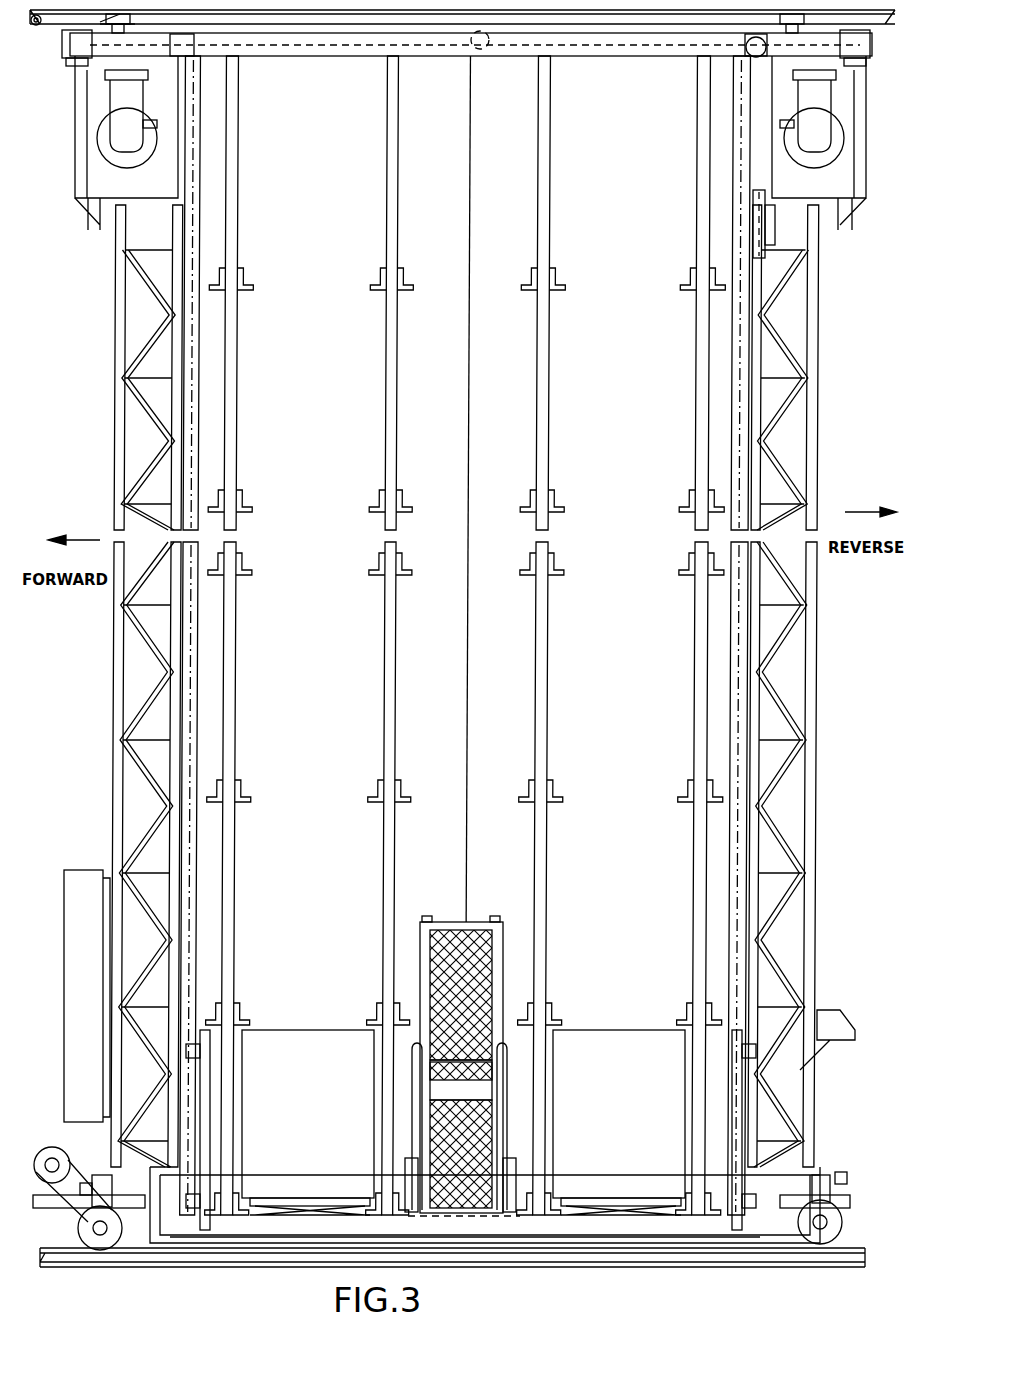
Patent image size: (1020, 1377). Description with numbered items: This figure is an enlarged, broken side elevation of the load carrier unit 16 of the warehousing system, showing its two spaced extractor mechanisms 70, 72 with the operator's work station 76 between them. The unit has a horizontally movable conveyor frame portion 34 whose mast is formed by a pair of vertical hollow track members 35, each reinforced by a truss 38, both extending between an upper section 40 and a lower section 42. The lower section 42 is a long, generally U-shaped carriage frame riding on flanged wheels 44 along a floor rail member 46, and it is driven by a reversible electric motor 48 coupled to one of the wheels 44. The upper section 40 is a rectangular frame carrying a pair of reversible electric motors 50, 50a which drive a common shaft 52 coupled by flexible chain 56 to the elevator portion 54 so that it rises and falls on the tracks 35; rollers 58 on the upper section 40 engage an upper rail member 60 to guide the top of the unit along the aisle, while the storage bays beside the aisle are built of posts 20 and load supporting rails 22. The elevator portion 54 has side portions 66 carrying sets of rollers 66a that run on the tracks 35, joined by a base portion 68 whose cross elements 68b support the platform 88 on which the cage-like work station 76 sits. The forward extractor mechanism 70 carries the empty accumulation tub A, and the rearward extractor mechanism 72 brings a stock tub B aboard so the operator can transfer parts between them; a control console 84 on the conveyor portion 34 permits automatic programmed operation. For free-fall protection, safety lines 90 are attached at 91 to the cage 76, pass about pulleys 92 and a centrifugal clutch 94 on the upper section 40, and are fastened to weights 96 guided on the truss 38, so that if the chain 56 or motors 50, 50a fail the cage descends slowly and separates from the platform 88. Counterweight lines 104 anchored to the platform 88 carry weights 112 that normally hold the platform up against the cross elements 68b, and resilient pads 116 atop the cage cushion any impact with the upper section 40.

The load carrier unit 16 is at (632, 38).
The posts 20 is at (238, 160).
The load supporting rails 22 is at (392, 296).
The conveyor frame portion 34 is at (115, 396).
The track members 35 is at (200, 318).
The truss 38 is at (115, 700).
The upper section 40 is at (348, 46).
The lower section 42 is at (765, 1258).
The flanged wheels 44 is at (108, 1250).
The rail member 46 is at (862, 1250).
The reversible electric motor 48 is at (44, 1152).
The reversible electric motor 50 is at (120, 140).
The reversible electric motor 50a is at (812, 148).
The common shaft 52 is at (435, 45).
The elevator portion 54 is at (648, 1238).
The flexible chain 56 is at (200, 668).
The rollers 58 is at (72, 40).
The upper rail member 60 is at (38, 26).
The side portions 66 is at (210, 1118).
The rollers 66a is at (200, 1051).
The base portion 68 is at (330, 1240).
The cross elements 68b is at (418, 1218).
The extractor mechanism 70 is at (275, 1212).
The extractor mechanism 72 is at (600, 1205).
The operator's work station 76 is at (508, 965).
The control console 84 is at (850, 1010).
The platform 88 is at (480, 1218).
The safety lines 90 is at (470, 395).
The attachment 91 is at (470, 920).
The pulleys 92 is at (480, 48).
The centrifugal clutch 94 is at (745, 45).
The weight 96 is at (775, 228).
The lines 104 is at (412, 1085).
The weights 112 is at (405, 1172).
The resilient pads 116 is at (427, 916).
The accumulation tub A is at (312, 1030).
The stock tub B is at (635, 1030).